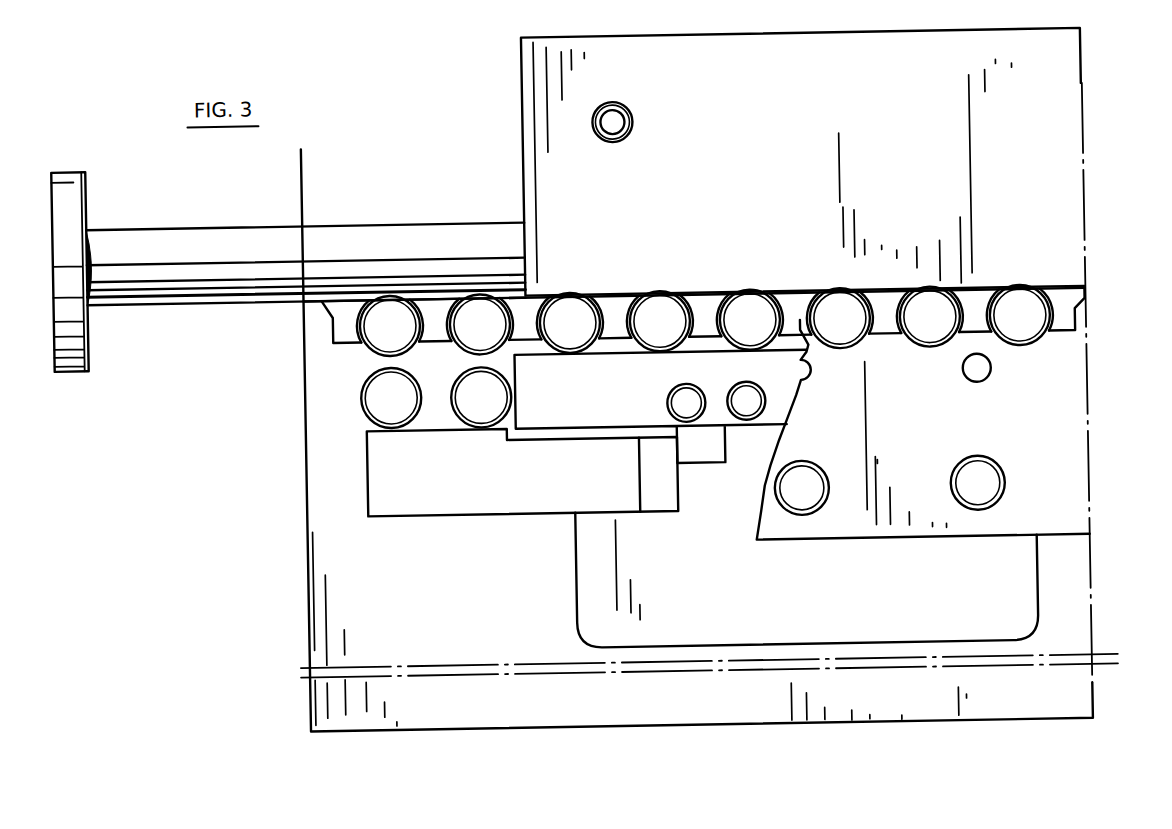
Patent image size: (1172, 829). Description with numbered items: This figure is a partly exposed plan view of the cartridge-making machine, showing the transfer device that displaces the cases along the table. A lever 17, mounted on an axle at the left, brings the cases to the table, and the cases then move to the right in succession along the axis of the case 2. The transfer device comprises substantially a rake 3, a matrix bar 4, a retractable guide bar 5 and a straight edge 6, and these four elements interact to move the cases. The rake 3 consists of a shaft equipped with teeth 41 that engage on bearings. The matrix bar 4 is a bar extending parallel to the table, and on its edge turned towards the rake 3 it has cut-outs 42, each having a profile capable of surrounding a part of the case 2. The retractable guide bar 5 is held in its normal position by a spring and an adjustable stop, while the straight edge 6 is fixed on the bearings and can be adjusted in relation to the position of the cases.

The case 2 is at (383, 305).
The rake 3 is at (198, 235).
The matrix bar 4 is at (1071, 494).
The retractable guide bar 5 is at (535, 415).
The straight edge 6 is at (1072, 200).
The lever 17 is at (368, 477).
The teeth 41 is at (337, 332).
The cut-outs 42 is at (1045, 349).